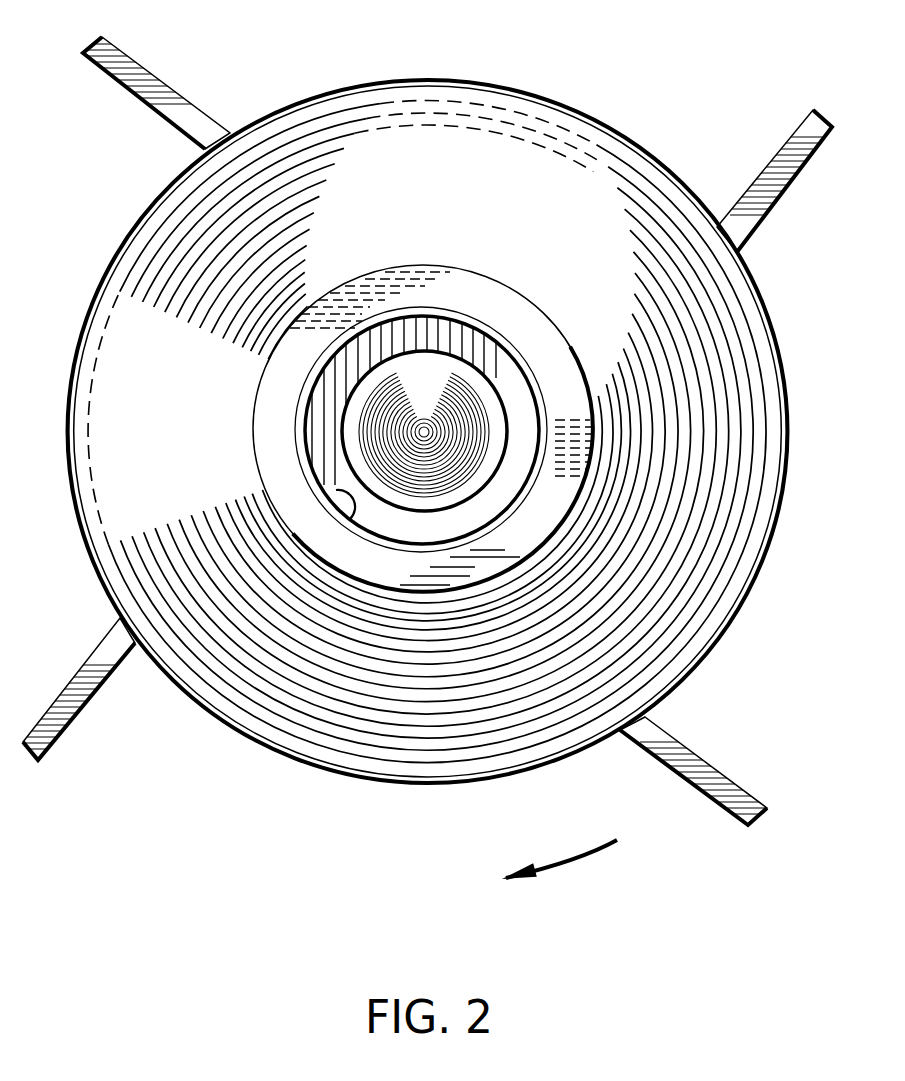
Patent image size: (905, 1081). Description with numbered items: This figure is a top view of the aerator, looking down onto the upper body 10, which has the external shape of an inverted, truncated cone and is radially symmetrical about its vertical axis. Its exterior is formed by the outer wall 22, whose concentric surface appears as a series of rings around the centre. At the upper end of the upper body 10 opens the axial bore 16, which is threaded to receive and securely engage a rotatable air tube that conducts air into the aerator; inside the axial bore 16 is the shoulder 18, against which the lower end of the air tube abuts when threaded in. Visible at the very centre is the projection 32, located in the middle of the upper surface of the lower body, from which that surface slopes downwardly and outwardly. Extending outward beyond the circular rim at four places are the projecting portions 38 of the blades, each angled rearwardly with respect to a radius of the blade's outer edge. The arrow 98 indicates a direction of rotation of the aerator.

The upper body 10 is at (517, 125).
The outer wall 22 is at (583, 183).
The projecting portion 38 is at (156, 88).
The projection 32 is at (420, 432).
The axial bore 16 is at (378, 500).
The shoulder 18 is at (335, 491).
The direction arrow 98 is at (577, 863).